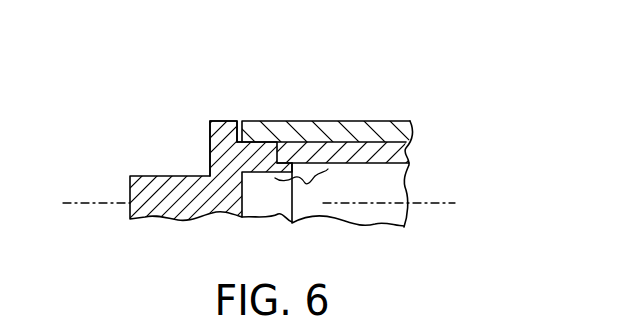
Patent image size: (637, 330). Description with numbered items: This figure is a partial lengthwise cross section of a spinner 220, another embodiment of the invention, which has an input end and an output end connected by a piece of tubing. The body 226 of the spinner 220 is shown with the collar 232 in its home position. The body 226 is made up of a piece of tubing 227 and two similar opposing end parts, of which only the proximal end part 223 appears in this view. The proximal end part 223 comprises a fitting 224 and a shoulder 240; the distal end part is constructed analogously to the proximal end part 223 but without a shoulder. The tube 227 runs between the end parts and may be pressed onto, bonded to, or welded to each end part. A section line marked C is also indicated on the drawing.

The proximal end part 223 is at (170, 74).
The spinner 220 is at (424, 100).
The fitting 224 is at (160, 176).
The shoulder 240 is at (230, 118).
The collar 232 is at (312, 121).
The piece of tubing 227 is at (392, 166).
The body 226 is at (307, 190).
The section line C is at (438, 207).